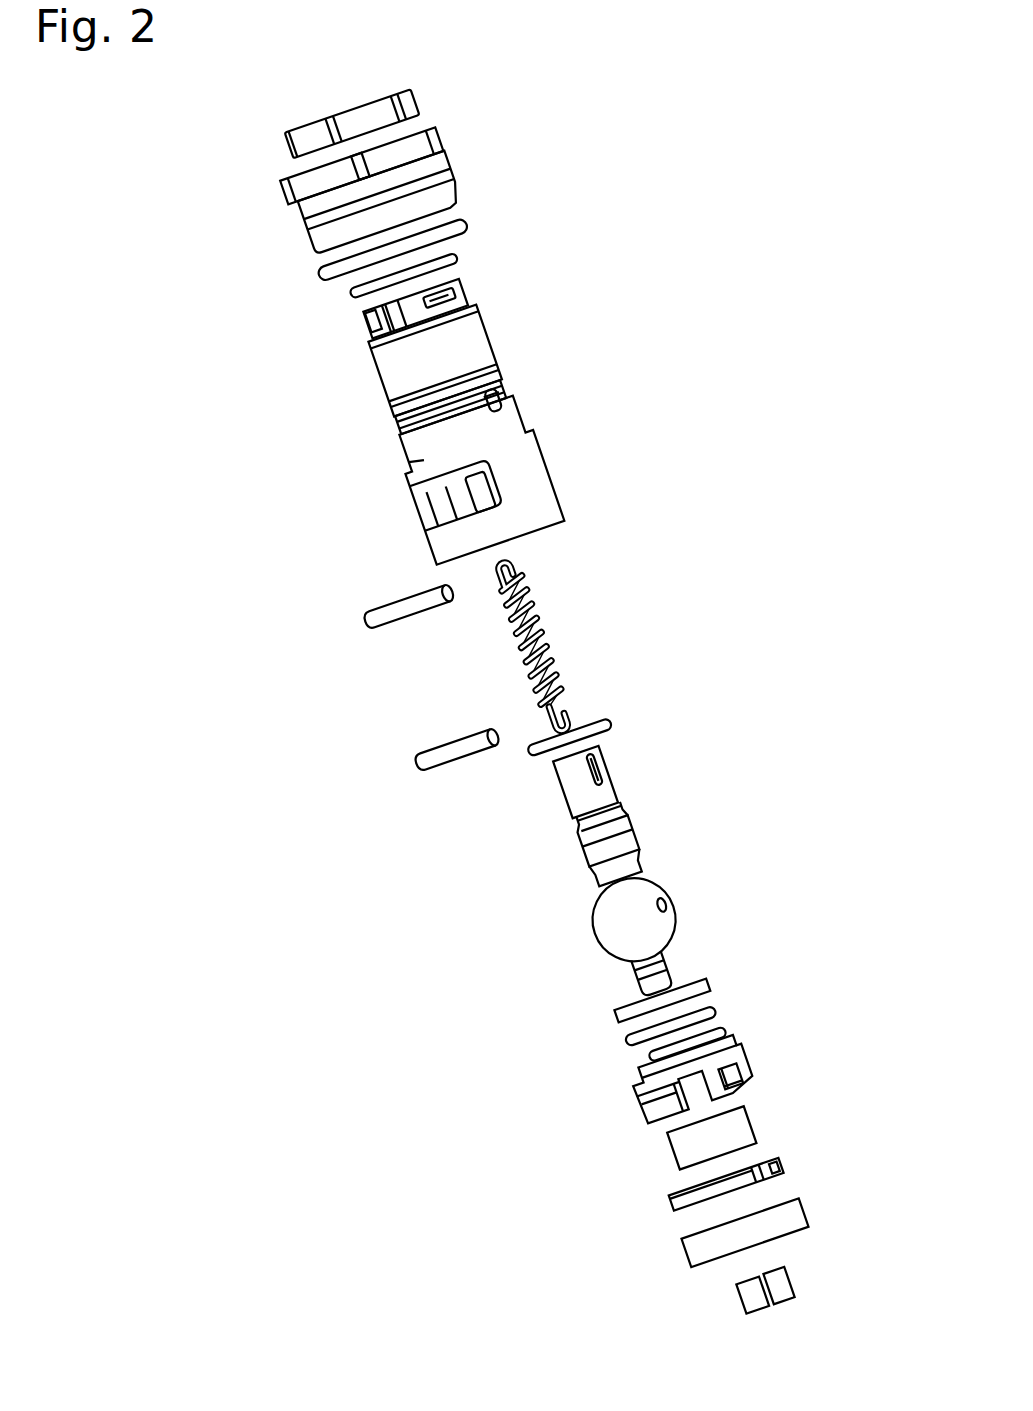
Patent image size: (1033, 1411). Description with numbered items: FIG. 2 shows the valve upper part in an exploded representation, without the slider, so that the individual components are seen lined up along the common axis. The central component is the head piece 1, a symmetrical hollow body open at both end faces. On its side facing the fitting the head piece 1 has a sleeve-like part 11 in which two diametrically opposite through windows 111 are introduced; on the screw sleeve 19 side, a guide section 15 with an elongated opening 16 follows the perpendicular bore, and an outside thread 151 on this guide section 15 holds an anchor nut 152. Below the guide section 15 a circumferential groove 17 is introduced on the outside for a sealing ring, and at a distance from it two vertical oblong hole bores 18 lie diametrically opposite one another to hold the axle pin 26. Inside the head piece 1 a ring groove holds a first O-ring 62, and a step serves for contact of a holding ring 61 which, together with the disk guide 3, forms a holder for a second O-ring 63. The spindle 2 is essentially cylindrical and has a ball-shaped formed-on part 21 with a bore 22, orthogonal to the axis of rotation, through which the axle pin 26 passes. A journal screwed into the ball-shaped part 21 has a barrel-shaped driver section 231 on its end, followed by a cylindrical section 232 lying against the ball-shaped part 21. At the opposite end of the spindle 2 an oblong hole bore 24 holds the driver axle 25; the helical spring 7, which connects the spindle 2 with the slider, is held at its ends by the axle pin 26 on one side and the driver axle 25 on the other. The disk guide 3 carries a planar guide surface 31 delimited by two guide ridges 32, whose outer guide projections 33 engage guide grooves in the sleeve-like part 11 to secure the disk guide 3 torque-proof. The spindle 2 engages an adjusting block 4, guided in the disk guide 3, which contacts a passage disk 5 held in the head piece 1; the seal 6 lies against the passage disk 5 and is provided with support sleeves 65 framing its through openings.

The head piece 1 is at (460, 420).
The sleeve-like part 11 is at (555, 490).
The through windows 111 is at (545, 455).
The guide section 15 is at (390, 326).
The elongated opening 16 is at (375, 338).
The circumferential groove 17 is at (410, 415).
The vertical oblong hole bores 18 is at (510, 385).
The screw sleeve 19 is at (465, 155).
The outside thread 151 is at (465, 280).
The anchor nut 152 is at (420, 103).
The first O-ring 62 is at (465, 227).
The spindle 2 is at (678, 877).
The ball-shaped formed-on part 21 is at (665, 880).
The bore 22 is at (670, 900).
The barrel-shaped driver section 231 is at (645, 990).
The cylindrical section 232 is at (690, 950).
The oblong hole bore 24 is at (605, 772).
The driver axle 25 is at (360, 622).
The axle pin 26 is at (420, 758).
The helical spring 7 is at (565, 630).
The holding ring 61 is at (600, 735).
The second O-ring 63 is at (632, 1040).
The disk guide 3 is at (716, 1084).
The planar guide surface 31 is at (635, 1095).
The guide ridges 32 is at (652, 1112).
The guide projections 33 is at (742, 1083).
The adjusting block 4 is at (762, 1122).
The passage disk 5 is at (795, 1160).
The seal 6 is at (815, 1203).
The support sleeves 65 is at (783, 1290).